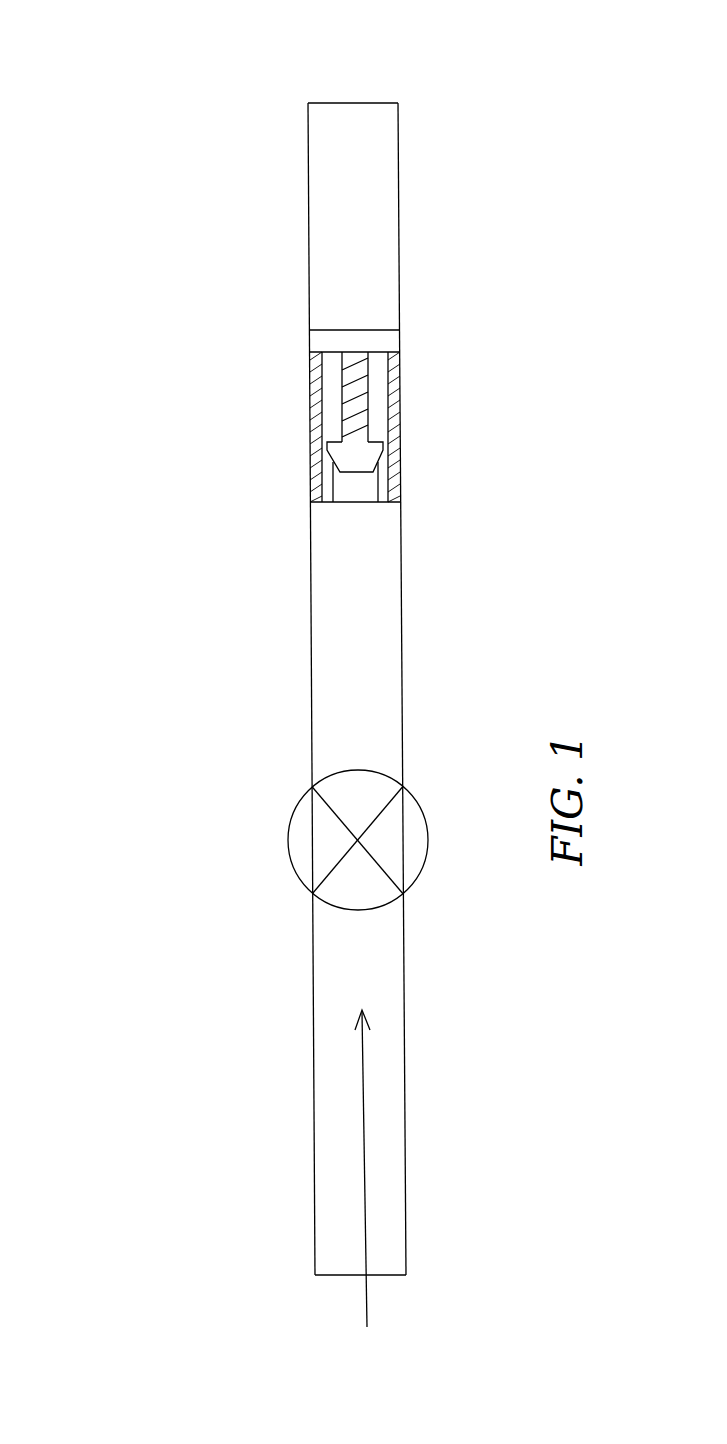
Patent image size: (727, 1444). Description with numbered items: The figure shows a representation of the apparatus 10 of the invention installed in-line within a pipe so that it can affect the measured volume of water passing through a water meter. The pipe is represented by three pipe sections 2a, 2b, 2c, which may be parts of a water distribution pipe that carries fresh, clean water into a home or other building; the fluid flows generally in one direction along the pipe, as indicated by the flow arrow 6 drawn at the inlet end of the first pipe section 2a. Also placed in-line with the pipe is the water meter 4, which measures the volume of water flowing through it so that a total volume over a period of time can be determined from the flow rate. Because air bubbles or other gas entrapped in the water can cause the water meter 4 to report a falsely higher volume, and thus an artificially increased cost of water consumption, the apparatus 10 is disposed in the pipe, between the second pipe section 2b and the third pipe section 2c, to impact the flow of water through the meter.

The pipe section 2a is at (337, 1022).
The pipe section 2b is at (337, 598).
The pipe section 2c is at (355, 203).
The water meter 4 is at (327, 857).
The flow direction arrow 6 is at (365, 1292).
The apparatus 10 is at (310, 478).